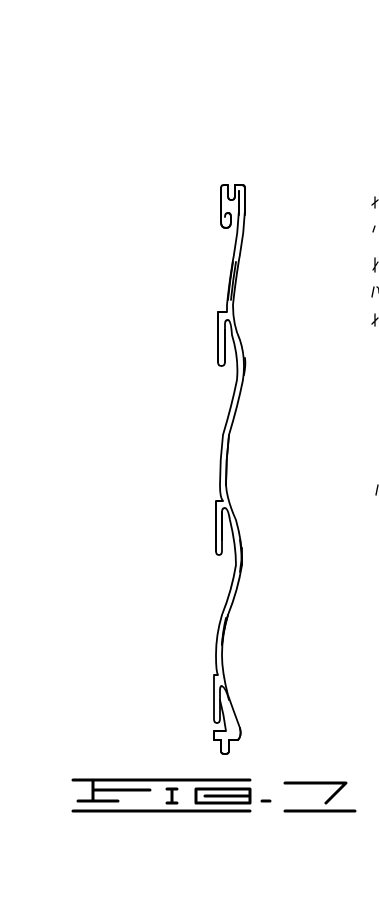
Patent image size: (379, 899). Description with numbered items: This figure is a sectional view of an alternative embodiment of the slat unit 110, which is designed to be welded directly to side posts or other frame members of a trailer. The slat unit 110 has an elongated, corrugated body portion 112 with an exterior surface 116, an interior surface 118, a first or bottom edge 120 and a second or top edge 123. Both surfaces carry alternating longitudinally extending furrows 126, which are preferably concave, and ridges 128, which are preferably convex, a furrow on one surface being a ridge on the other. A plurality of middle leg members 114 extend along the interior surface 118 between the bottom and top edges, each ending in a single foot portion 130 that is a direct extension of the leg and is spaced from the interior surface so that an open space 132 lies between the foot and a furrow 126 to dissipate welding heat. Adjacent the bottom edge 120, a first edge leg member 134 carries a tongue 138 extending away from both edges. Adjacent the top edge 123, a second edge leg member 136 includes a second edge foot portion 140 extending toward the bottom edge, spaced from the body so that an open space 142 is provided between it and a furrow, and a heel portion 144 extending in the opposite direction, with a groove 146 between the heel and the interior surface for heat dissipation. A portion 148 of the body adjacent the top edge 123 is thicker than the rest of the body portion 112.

The slat unit 110 is at (110, 122).
The body portion 112 is at (245, 356).
The middle leg member 114 is at (218, 322).
The exterior surface 116 is at (246, 372).
The interior surface 118 is at (223, 429).
The first or bottom edge 120 is at (243, 739).
The second or top edge 123 is at (240, 190).
The furrow 126 is at (235, 272).
The ridge 128 is at (224, 268).
The foot portion 130 is at (219, 358).
The open space 132 is at (229, 343).
The first edge leg member 134 is at (214, 738).
The second edge leg member 136 is at (224, 212).
The tongue 138 is at (229, 755).
The second edge foot portion 140 is at (228, 217).
The open space 142 is at (230, 228).
The heel portion 144 is at (221, 200).
The groove 146 is at (231, 195).
The portion 148 is at (246, 200).